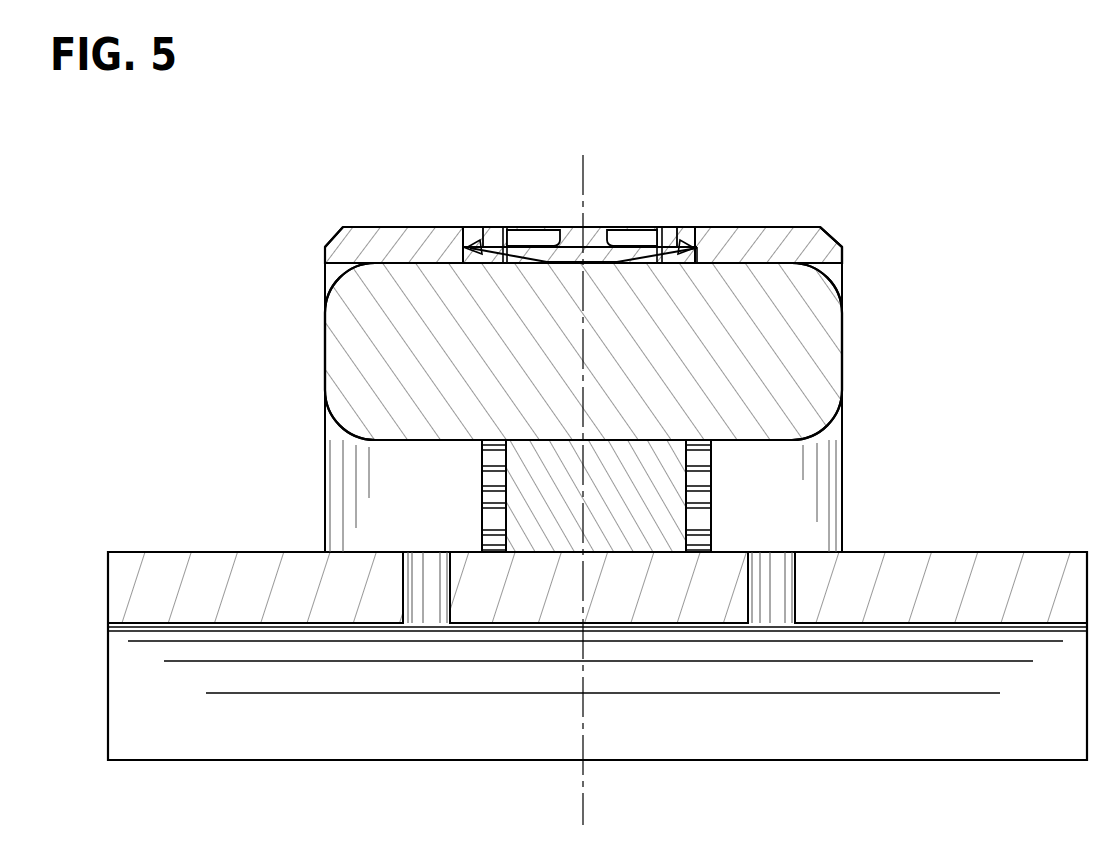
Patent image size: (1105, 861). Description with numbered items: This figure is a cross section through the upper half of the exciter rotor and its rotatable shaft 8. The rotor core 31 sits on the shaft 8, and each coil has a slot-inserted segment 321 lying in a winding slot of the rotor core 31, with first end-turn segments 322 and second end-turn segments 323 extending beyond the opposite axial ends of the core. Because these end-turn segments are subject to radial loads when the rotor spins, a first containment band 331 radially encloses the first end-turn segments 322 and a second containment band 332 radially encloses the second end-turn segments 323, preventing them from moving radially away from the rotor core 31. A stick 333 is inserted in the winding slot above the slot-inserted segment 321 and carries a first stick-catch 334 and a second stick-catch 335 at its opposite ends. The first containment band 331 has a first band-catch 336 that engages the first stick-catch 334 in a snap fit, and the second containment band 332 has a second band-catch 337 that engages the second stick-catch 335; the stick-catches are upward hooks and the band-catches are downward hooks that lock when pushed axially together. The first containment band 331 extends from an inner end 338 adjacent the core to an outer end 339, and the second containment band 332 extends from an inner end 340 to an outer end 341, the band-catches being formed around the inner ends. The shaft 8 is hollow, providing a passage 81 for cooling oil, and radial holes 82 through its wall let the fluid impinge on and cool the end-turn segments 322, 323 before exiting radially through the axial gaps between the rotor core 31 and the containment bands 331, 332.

The rotatable shaft 8 is at (986, 571).
The passage 81 is at (927, 720).
The radial holes 82 is at (415, 588).
The rotor core 31 is at (608, 508).
The slot-inserted segment 321 is at (572, 337).
The first end-turn segments 322 is at (395, 355).
The second end-turn segments 323 is at (739, 339).
The first containment band 331 is at (402, 245).
The second containment band 332 is at (797, 246).
The stick 333 is at (591, 238).
The first stick-catch 334 is at (475, 247).
The second stick-catch 335 is at (690, 248).
The first band-catch 336 is at (487, 240).
The second band-catch 337 is at (684, 238).
The inner end 338 is at (502, 242).
The outer end 339 is at (324, 247).
The inner end 340 is at (668, 242).
The outer end 341 is at (845, 258).